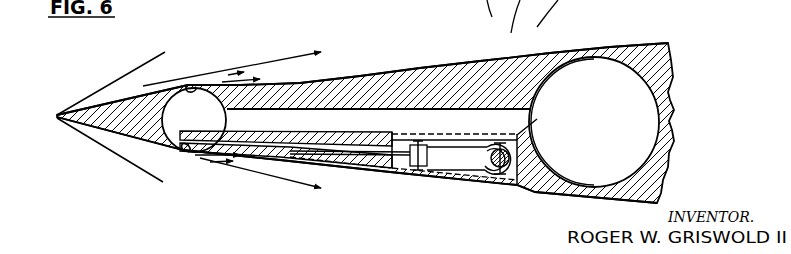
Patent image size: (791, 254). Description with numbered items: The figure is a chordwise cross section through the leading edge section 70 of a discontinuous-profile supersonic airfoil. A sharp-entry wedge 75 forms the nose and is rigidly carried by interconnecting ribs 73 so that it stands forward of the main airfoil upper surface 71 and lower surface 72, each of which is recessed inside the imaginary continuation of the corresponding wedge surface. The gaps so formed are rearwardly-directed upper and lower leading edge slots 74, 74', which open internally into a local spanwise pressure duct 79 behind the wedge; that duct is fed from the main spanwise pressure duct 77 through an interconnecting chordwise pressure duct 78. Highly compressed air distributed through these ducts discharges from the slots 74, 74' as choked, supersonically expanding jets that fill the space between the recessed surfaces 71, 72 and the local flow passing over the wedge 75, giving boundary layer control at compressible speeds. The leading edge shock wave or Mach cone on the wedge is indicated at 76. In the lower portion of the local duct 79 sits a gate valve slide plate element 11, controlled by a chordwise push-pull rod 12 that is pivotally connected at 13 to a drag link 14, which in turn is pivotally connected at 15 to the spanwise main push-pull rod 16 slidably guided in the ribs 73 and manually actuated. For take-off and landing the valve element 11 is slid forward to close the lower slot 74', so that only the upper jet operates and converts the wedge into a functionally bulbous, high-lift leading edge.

The leading edge section 70 is at (668, 44).
The main airfoil upper surface 71 is at (446, 64).
The main airfoil lower surface 72 is at (537, 194).
The interconnecting ribs 73 is at (152, 146).
The upper leading edge slot 74 is at (195, 66).
The lower leading edge slot 74' is at (192, 179).
The sharp-entry wedge 75 is at (101, 104).
The leading edge shock wave 76 is at (125, 73).
The main spanwise pressure duct 77 is at (637, 128).
The interconnecting chordwise pressure duct 78 is at (357, 123).
The local spanwise pressure duct 79 is at (207, 103).
The gate valve slide plate element 11 is at (216, 160).
The chordwise push-pull rod 12 is at (390, 170).
The pivotal connection 13 is at (417, 167).
The drag link 14 is at (435, 158).
The pivotal connection 15 is at (497, 185).
The spanwise main push-pull rod 16 is at (508, 175).